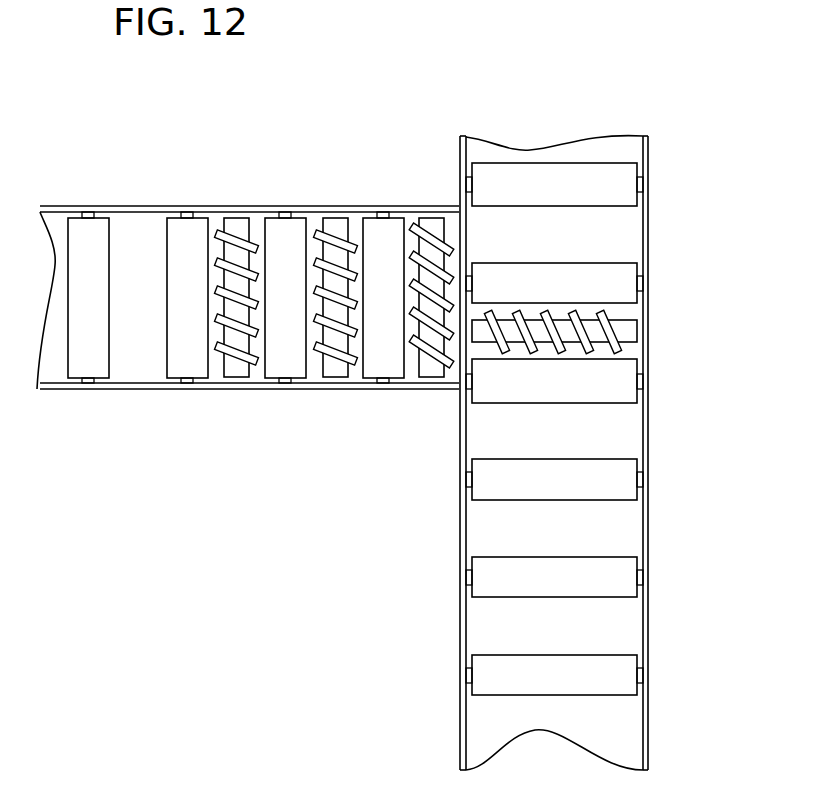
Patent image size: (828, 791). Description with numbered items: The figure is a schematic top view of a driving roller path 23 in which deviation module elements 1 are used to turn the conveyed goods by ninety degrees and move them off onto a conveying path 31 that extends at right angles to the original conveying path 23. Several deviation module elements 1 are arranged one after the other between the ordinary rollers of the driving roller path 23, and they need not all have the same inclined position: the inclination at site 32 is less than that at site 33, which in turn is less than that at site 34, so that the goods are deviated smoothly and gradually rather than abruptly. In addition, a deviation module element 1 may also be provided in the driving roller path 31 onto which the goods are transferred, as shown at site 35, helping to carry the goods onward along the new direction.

The deviation module element 1 is at (430, 218).
The driving roller path 23 is at (123, 202).
The conveying path 31 is at (652, 647).
The site 32 is at (234, 392).
The site 33 is at (329, 393).
The site 34 is at (432, 390).
The site 35 is at (653, 347).